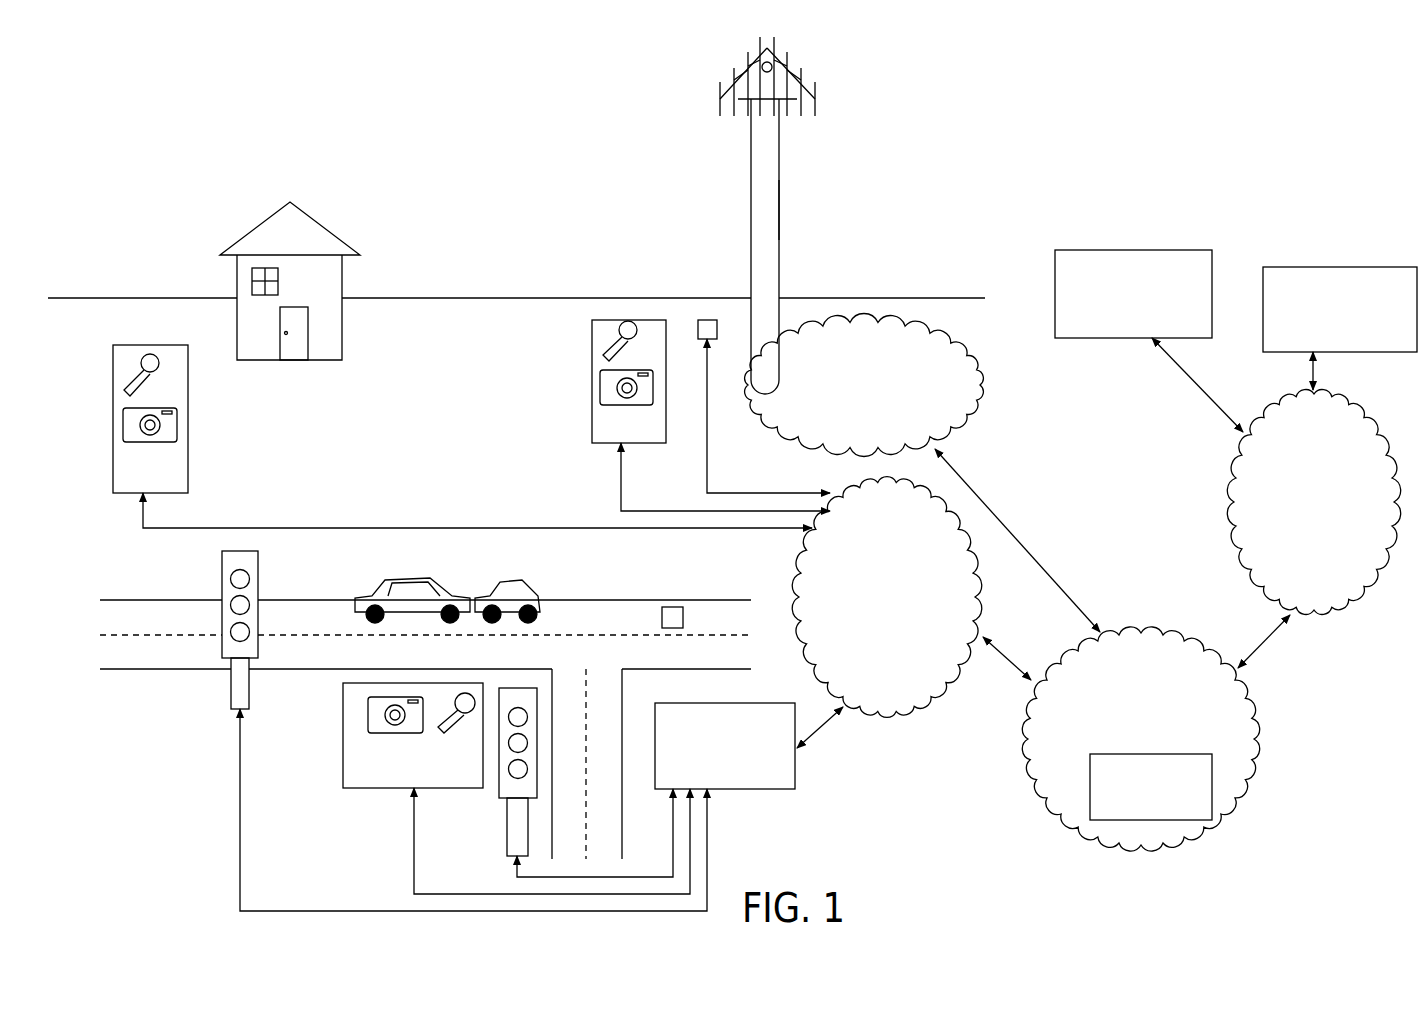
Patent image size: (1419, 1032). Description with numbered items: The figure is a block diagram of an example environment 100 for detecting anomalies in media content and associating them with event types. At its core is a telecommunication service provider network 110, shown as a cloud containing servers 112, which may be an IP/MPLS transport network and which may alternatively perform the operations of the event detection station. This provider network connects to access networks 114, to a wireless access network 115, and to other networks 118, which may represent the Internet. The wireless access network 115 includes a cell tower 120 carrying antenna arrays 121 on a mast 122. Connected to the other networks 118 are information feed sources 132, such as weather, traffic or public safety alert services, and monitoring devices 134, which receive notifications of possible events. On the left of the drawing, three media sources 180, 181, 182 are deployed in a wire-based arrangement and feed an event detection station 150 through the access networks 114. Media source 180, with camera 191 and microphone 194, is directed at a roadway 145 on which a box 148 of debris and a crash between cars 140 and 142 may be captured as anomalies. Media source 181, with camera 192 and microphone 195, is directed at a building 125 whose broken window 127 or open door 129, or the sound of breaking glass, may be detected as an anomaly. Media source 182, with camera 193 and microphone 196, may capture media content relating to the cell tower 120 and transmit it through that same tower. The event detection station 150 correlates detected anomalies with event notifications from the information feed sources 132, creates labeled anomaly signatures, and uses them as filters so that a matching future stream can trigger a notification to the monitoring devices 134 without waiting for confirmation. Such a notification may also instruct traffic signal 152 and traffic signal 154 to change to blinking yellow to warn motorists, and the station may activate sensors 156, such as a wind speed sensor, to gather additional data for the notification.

The environment 100 is at (127, 54).
The telecommunication service provider network 110 is at (1126, 737).
The servers 112 is at (1135, 810).
The access networks 114 is at (871, 645).
The wireless access network 115 is at (852, 436).
The other networks 118 is at (1297, 483).
The cell tower 120 is at (751, 160).
The antenna arrays 121 is at (817, 100).
The mast 122 is at (779, 212).
The building 125 is at (267, 218).
The window 127 is at (252, 284).
The door 129 is at (308, 333).
The information feed sources 132 is at (1117, 332).
The monitoring devices 134 is at (1326, 337).
The car 140 is at (358, 595).
The car 142 is at (478, 598).
The roadway 145 is at (604, 658).
The box 148 is at (670, 607).
The event detection station 150 is at (740, 783).
The traffic signal 152 is at (235, 706).
The traffic signal 154 is at (507, 822).
The sensors 156 is at (707, 320).
The media source 180 is at (430, 784).
The media source 181 is at (168, 492).
The media source 182 is at (646, 431).
The camera 191 is at (399, 733).
The camera 192 is at (126, 426).
The camera 193 is at (604, 392).
The microphone 194 is at (452, 724).
The microphone 195 is at (128, 392).
The microphone 196 is at (612, 352).